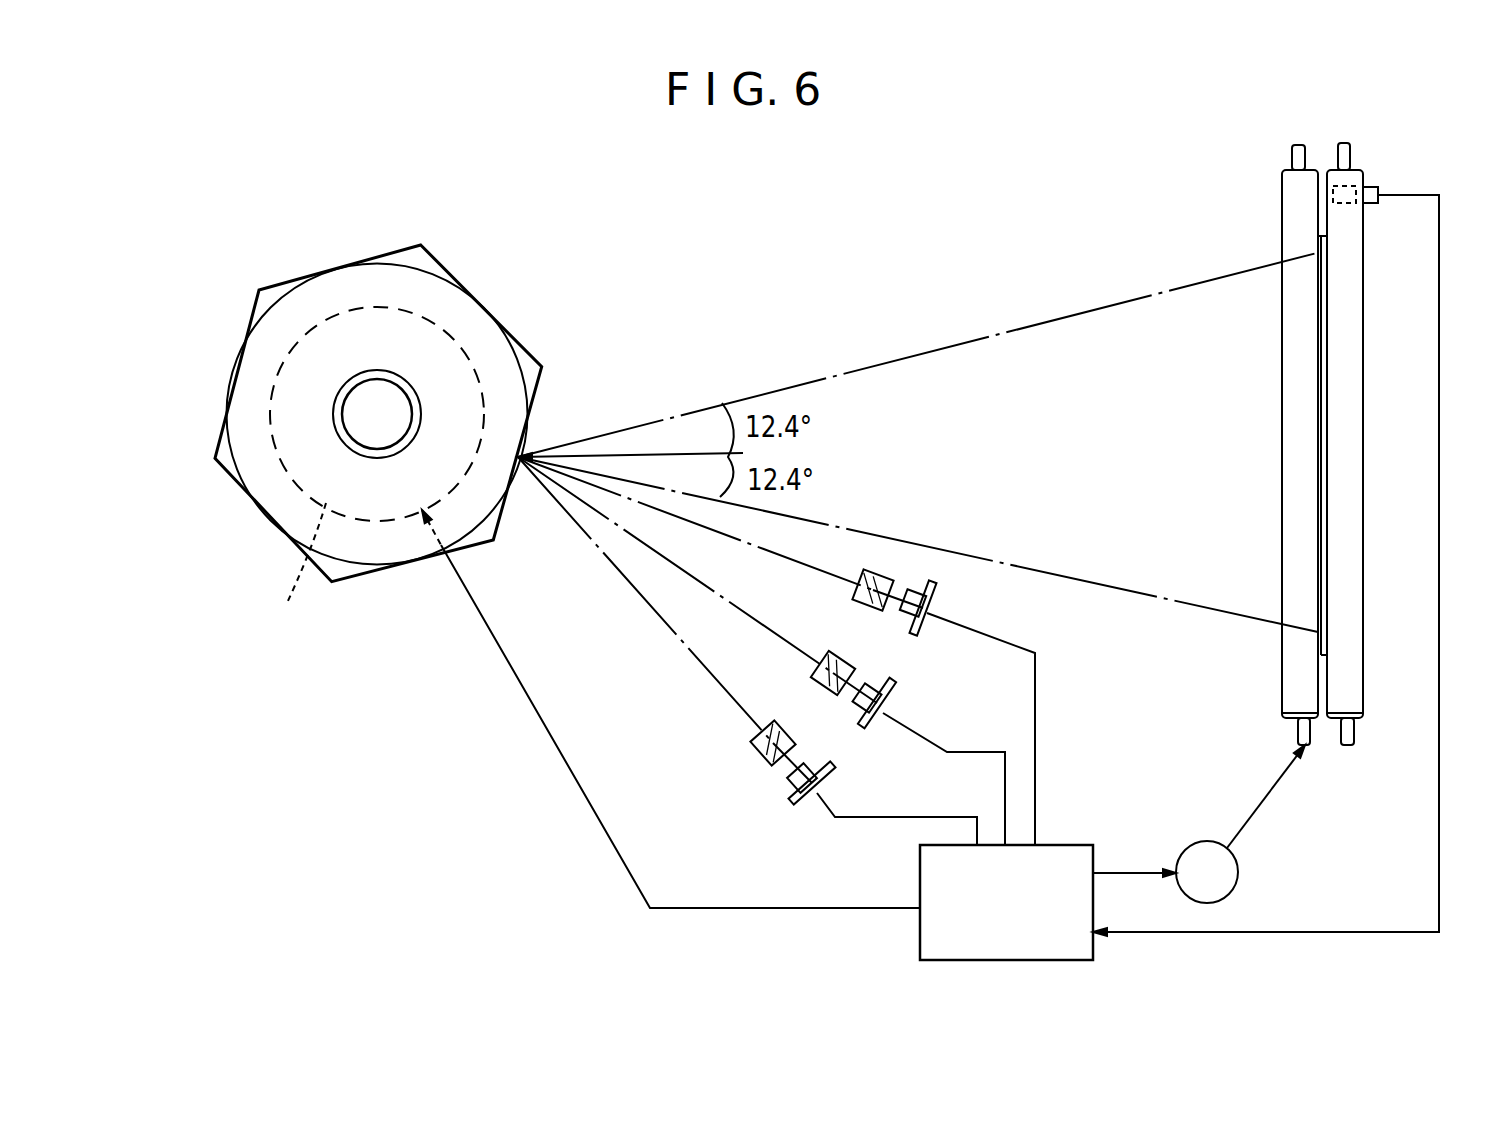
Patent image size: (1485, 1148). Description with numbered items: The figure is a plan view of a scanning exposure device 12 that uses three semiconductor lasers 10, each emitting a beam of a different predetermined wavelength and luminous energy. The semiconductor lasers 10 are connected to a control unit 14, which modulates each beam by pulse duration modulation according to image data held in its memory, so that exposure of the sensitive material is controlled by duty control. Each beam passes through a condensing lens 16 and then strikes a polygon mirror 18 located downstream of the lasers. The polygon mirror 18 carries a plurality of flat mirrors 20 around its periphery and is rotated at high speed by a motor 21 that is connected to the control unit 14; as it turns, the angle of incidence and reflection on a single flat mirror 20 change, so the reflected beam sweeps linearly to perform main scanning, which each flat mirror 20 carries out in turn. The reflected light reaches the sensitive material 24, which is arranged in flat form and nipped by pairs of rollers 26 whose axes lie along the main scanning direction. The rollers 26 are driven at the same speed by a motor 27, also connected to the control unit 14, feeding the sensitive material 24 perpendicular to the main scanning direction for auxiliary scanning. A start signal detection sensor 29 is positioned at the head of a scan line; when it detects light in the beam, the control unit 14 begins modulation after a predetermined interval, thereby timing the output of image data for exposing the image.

The semiconductor laser 10 is at (937, 602).
The scanning exposure device 12 is at (870, 205).
The control unit 14 is at (1080, 843).
The condensing lens 16 is at (867, 607).
The polygon mirror 18 is at (487, 300).
The flat mirror 20 is at (303, 275).
The motor 21 is at (295, 565).
The sensitive material 24 is at (1315, 318).
The roller 26 is at (1282, 187).
The motor 27 is at (1202, 840).
The start signal detection sensor 29 is at (1370, 185).